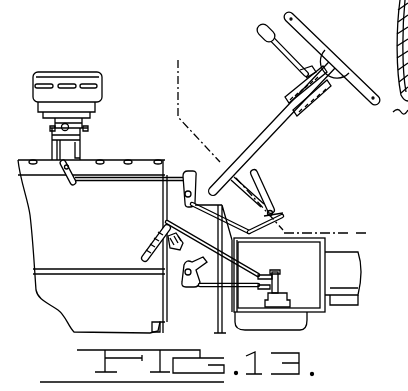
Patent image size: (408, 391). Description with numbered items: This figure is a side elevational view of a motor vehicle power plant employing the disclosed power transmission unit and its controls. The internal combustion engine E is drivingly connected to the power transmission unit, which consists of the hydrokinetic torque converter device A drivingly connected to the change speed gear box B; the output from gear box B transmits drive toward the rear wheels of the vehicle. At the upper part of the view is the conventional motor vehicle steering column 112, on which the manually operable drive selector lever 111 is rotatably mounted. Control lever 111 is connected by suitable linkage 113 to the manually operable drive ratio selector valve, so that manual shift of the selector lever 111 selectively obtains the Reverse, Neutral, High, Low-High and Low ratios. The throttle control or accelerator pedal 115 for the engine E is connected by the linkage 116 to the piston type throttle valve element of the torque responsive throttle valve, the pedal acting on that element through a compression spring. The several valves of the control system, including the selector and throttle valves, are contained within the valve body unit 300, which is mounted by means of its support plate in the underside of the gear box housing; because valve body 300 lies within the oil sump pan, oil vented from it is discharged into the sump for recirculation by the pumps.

The drive selector lever 111 is at (276, 43).
The steering column 112 is at (272, 126).
The linkage 113 is at (143, 262).
The accelerator pedal 115 is at (262, 183).
The linkage 116 is at (246, 245).
The valve body unit 300 is at (312, 268).
The torque converter device A is at (183, 307).
The change speed gear box B is at (307, 250).
The engine E is at (130, 143).